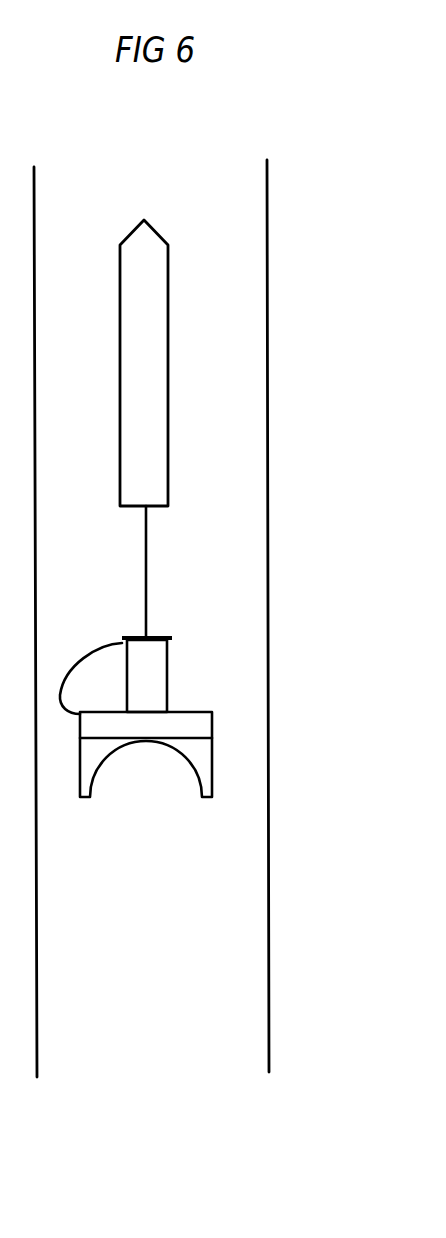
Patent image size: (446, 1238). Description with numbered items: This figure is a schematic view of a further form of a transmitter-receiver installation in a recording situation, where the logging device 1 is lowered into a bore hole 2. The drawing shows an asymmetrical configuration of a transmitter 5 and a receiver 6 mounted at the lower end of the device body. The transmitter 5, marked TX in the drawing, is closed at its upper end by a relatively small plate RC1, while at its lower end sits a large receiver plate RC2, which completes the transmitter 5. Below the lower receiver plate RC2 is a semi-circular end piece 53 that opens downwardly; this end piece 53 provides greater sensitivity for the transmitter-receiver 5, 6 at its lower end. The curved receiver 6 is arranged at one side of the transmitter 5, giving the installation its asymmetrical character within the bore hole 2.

The logging device 1 is at (150, 400).
The bore hole 2 is at (222, 268).
The transmitter 5 is at (234, 676).
The receiver 6 is at (98, 642).
The semi-circular end piece 53 is at (218, 764).
The small plate RC1 is at (162, 621).
The transmitter TX is at (167, 676).
The large receiver plate RC2 is at (171, 753).